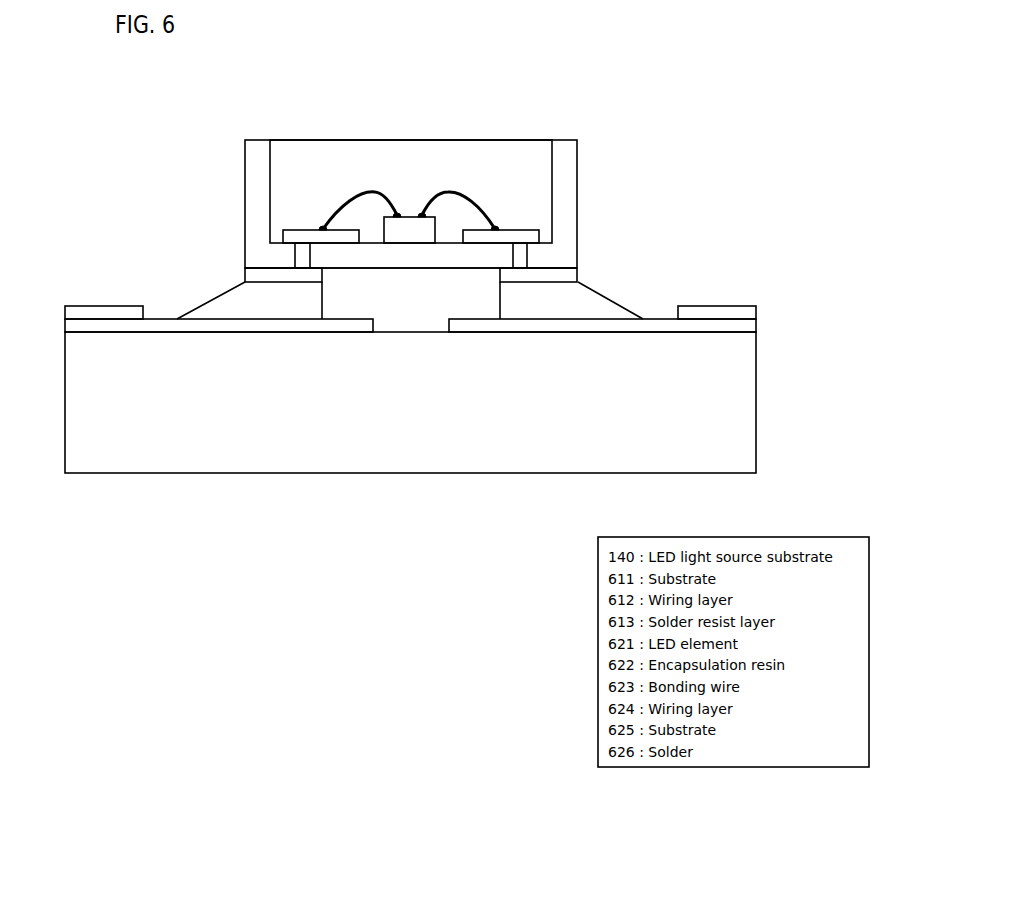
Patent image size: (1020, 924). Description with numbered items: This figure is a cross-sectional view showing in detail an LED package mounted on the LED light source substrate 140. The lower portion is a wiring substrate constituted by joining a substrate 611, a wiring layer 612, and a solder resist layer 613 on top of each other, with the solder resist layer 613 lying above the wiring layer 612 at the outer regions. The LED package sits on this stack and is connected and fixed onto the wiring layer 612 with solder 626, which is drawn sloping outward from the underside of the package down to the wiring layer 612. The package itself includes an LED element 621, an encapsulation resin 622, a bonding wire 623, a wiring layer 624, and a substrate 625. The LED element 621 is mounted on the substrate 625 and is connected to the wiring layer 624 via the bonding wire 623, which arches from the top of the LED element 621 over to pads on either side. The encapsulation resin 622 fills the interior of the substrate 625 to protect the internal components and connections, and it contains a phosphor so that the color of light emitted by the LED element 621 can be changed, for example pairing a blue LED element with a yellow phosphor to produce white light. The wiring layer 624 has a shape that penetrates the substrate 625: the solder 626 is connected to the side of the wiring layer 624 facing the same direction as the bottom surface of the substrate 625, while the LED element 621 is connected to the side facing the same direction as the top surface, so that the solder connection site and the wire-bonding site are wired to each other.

The LED light source substrate 140 is at (649, 125).
The substrate 611 is at (750, 392).
The wiring layer 612 is at (748, 327).
The solder resist layer 613 is at (748, 314).
The LED element 621 is at (407, 223).
The encapsulation resin 622 is at (472, 147).
The bonding wire 623 is at (362, 193).
The wiring layer 624 is at (575, 275).
The substrate 625 is at (573, 198).
The solder 626 is at (610, 308).